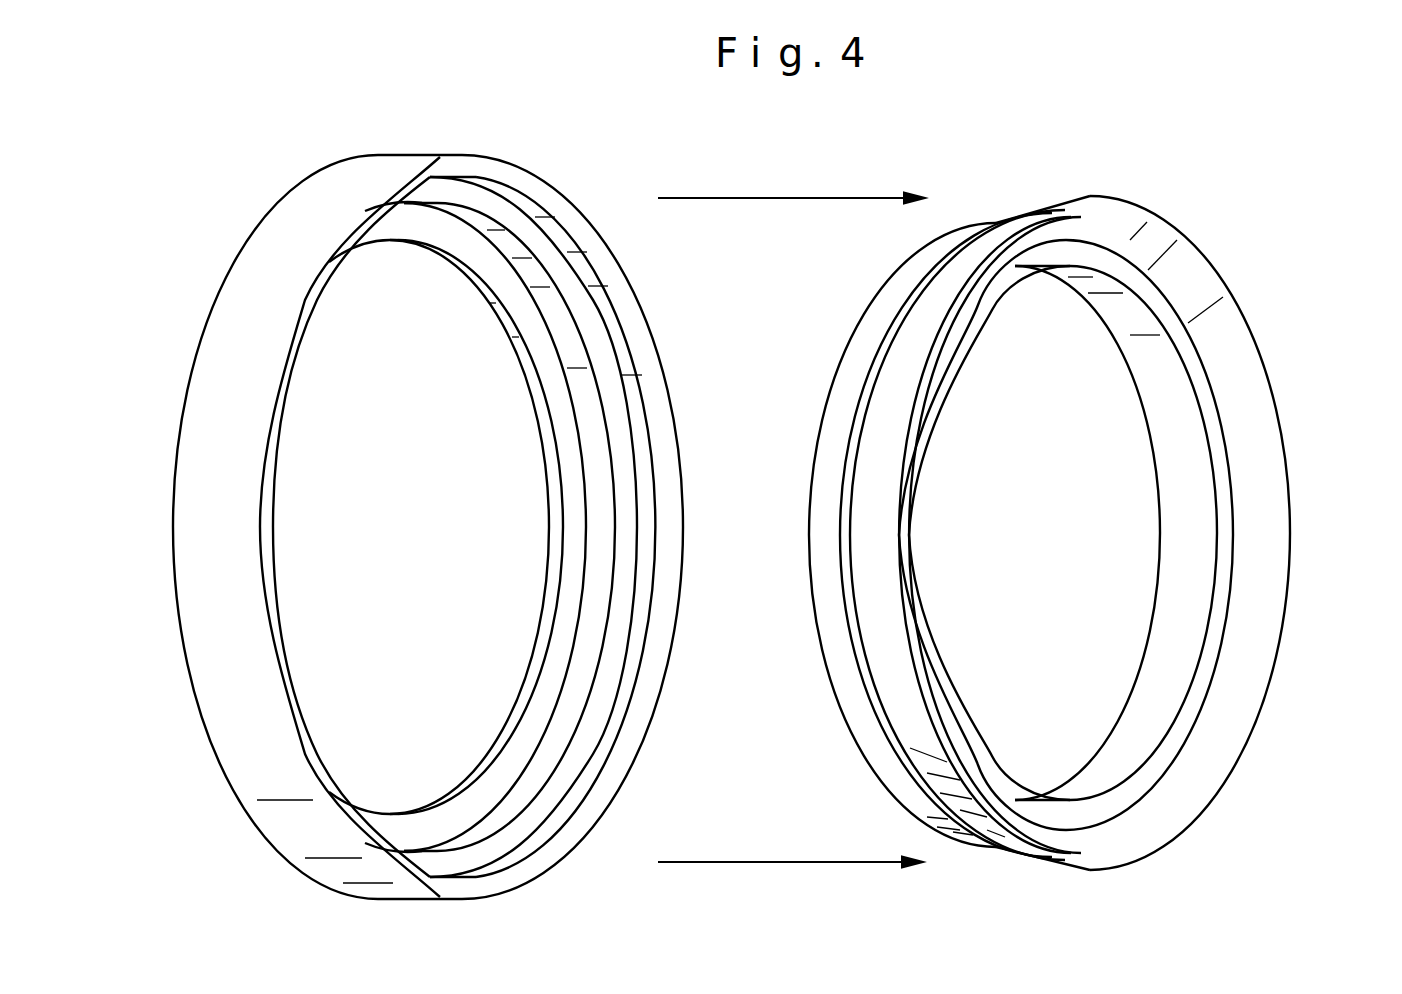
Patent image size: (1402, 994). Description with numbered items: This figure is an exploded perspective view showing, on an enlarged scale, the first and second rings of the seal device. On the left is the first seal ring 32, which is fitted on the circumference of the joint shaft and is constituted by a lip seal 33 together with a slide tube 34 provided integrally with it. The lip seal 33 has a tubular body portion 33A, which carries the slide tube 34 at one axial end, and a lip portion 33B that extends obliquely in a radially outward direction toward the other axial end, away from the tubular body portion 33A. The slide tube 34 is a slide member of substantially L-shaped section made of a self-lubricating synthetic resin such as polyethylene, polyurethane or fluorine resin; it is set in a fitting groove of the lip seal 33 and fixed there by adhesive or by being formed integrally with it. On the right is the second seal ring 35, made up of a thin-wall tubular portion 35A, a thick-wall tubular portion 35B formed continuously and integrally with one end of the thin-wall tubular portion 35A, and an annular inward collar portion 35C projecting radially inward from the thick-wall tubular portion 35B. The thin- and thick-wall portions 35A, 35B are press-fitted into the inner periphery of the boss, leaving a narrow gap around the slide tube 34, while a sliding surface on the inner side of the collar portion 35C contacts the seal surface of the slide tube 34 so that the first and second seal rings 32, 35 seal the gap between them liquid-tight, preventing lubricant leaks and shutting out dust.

The first seal ring 32 is at (1063, 533).
The lip seal 33 is at (1180, 543).
The tubular body portion 33A is at (1143, 683).
The lip portion 33B is at (1220, 745).
The slide tube 34 is at (835, 423).
The second seal ring 35 is at (287, 240).
The thin-wall tubular portion 35A is at (648, 720).
The thick-wall tubular portion 35B is at (598, 335).
The annular inward collar portion 35C is at (560, 548).